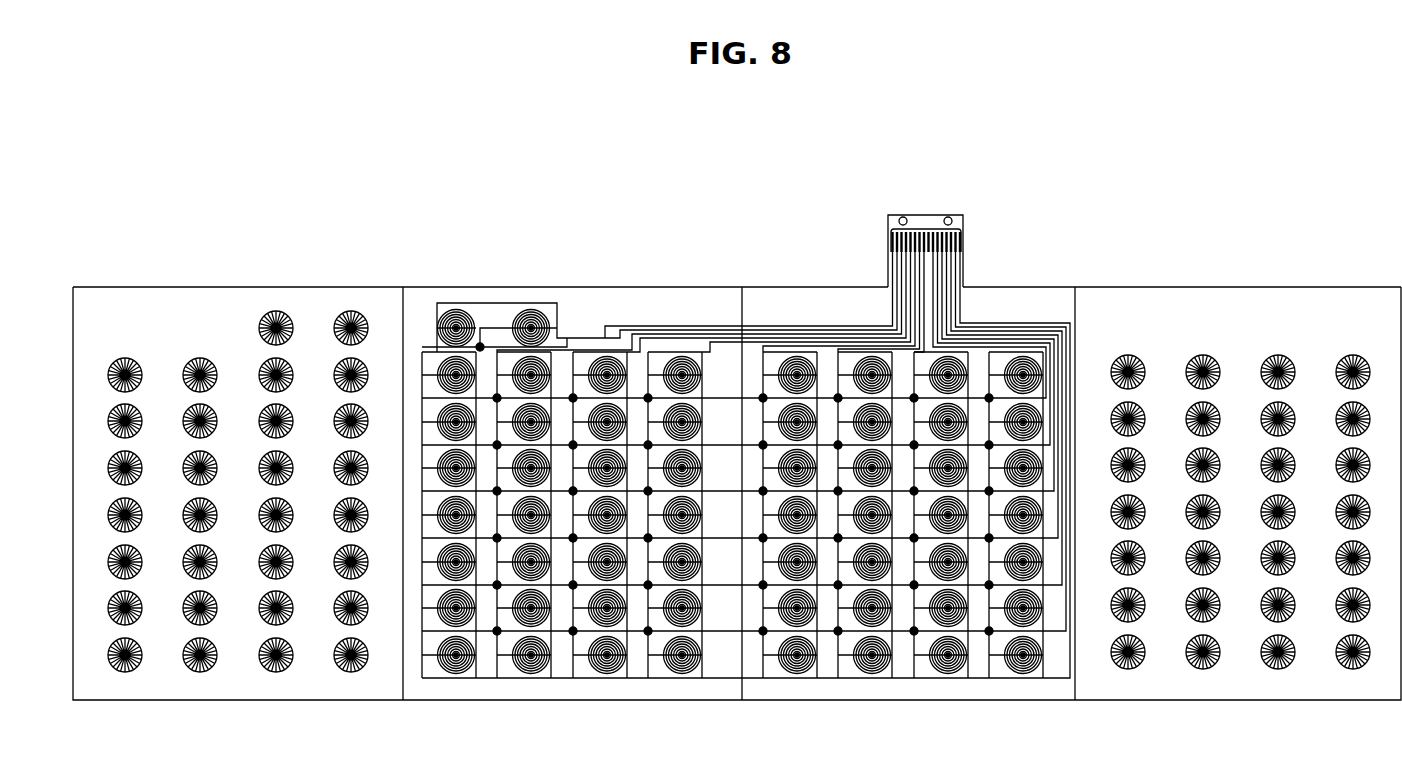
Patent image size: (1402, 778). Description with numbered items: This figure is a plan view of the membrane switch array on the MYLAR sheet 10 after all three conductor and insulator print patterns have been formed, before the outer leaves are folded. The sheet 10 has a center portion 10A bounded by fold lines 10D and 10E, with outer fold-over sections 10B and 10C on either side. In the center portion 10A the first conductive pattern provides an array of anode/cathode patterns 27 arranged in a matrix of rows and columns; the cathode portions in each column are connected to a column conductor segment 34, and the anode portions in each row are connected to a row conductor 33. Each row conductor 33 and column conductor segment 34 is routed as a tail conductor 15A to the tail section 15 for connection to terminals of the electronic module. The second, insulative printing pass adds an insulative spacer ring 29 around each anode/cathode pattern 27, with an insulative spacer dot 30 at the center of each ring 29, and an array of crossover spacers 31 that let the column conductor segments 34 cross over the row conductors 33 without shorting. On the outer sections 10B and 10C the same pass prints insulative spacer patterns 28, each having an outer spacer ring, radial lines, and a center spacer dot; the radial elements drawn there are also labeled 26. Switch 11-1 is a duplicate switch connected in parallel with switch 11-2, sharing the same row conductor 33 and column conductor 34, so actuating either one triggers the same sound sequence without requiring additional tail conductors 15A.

The MYLAR sheet 10 is at (628, 706).
The center portion 10A is at (825, 695).
The outer fold-over section 10B is at (148, 695).
The outer fold-over section 10C is at (1166, 690).
The fold line 10D is at (403, 686).
The fold line 10E is at (1076, 676).
The duplicate switch 11-1 is at (520, 329).
The switch 11-2 is at (437, 356).
The tail section 15 is at (888, 231).
The tail conductors 15A is at (933, 224).
The radial electrode 26 is at (206, 672).
The anode/cathode pattern 27 is at (767, 499).
The insulative spacer pattern 28 is at (268, 673).
The insulative spacer ring 29 is at (767, 499).
The insulative spacer dot 30 is at (618, 357).
The crossover spacer 31 is at (572, 638).
The row conductor 33 is at (722, 444).
The column conductor segment 34 is at (497, 638).